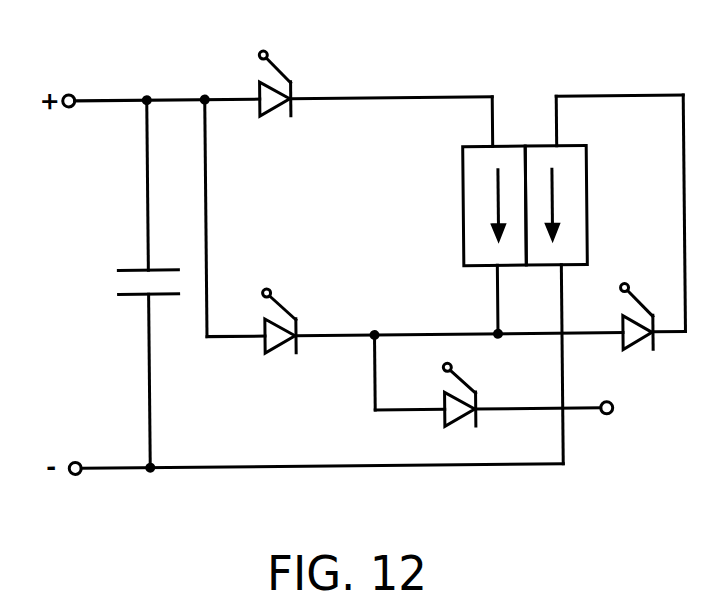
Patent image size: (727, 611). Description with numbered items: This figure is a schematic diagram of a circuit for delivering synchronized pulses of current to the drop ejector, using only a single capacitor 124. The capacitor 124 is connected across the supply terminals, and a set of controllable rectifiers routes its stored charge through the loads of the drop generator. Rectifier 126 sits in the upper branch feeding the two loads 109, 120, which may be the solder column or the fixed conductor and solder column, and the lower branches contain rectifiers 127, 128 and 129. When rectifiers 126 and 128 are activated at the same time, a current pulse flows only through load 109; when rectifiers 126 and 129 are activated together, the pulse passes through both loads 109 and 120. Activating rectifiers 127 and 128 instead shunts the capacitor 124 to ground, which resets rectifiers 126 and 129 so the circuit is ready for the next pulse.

The load 109 is at (474, 176).
The load 120 is at (576, 228).
The capacitor 124 is at (138, 266).
The rectifier 126 is at (294, 90).
The rectifier 127 is at (300, 324).
The rectifier 128 is at (479, 404).
The rectifier 129 is at (657, 345).